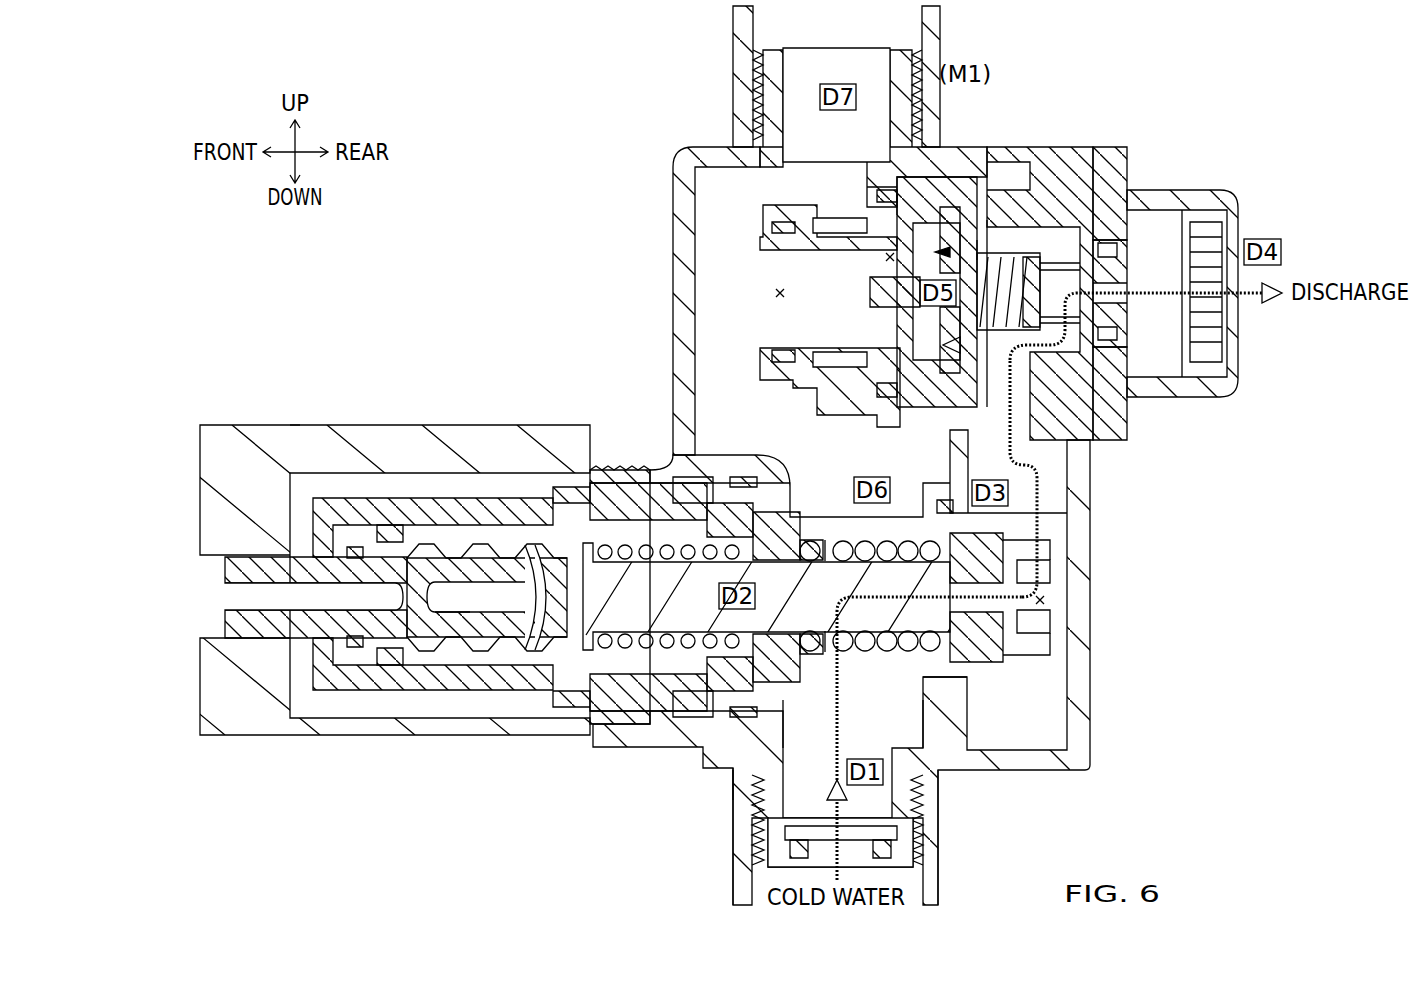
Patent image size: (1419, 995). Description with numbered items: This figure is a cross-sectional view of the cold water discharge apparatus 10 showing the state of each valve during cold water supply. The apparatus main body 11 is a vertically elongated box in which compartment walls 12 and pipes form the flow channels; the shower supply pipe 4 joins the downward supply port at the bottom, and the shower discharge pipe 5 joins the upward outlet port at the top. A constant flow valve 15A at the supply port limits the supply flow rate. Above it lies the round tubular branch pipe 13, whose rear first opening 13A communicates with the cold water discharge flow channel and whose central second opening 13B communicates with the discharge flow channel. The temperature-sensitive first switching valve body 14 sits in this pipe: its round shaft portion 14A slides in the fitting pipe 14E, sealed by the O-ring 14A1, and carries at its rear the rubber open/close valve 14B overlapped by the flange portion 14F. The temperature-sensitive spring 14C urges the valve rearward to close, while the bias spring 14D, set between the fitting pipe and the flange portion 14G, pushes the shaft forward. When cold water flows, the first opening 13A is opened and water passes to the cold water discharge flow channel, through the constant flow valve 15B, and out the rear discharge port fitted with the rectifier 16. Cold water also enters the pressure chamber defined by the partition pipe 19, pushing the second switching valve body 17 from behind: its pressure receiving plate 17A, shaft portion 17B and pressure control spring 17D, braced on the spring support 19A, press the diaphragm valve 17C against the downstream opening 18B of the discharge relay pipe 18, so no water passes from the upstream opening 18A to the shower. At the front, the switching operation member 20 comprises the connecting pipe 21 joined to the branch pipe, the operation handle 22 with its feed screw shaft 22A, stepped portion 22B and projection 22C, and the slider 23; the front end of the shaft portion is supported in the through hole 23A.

The shower supply pipe 4 is at (912, 890).
The shower discharge pipe 5 is at (790, 12).
The cold water discharge apparatus 10 is at (1104, 543).
The apparatus main body 11 is at (673, 372).
The compartment walls 12 is at (783, 380).
The branch pipe 13 is at (985, 660).
The first opening 13A is at (1046, 600).
The second opening 13B is at (835, 540).
The first switching valve body 14 is at (900, 623).
The shaft portion 14A is at (540, 625).
The O-ring 14A1 is at (700, 660).
The open/close valve 14B is at (1005, 635).
The temperature-sensitive spring 14C is at (870, 648).
The bias spring 14D is at (630, 640).
The fitting pipe 14E is at (728, 775).
The flange portion 14F is at (980, 668).
The flange portion 14G is at (597, 605).
The constant flow valve 15A is at (855, 872).
The constant flow valve 15B is at (1110, 277).
The rectifier 16 is at (1203, 333).
The second switching valve body 17 is at (962, 198).
The pressure receiving plate 17A is at (925, 322).
The shaft portion 17B is at (980, 245).
The diaphragm valve 17C is at (897, 205).
The pressure control spring 17D is at (1030, 290).
The discharge relay pipe 18 is at (876, 195).
The upstream opening 18A is at (775, 293).
The downstream opening 18B is at (886, 257).
The partition pipe 19 is at (985, 425).
The spring support 19A is at (1095, 250).
The switching operation member 20 is at (188, 472).
The connecting pipe 21 is at (500, 517).
The operation handle 22 is at (200, 524).
The feed screw shaft 22A is at (450, 623).
The stepped portion 22B is at (393, 525).
The projection 22C is at (293, 430).
The slider 23 is at (467, 543).
The through hole 23A is at (540, 560).